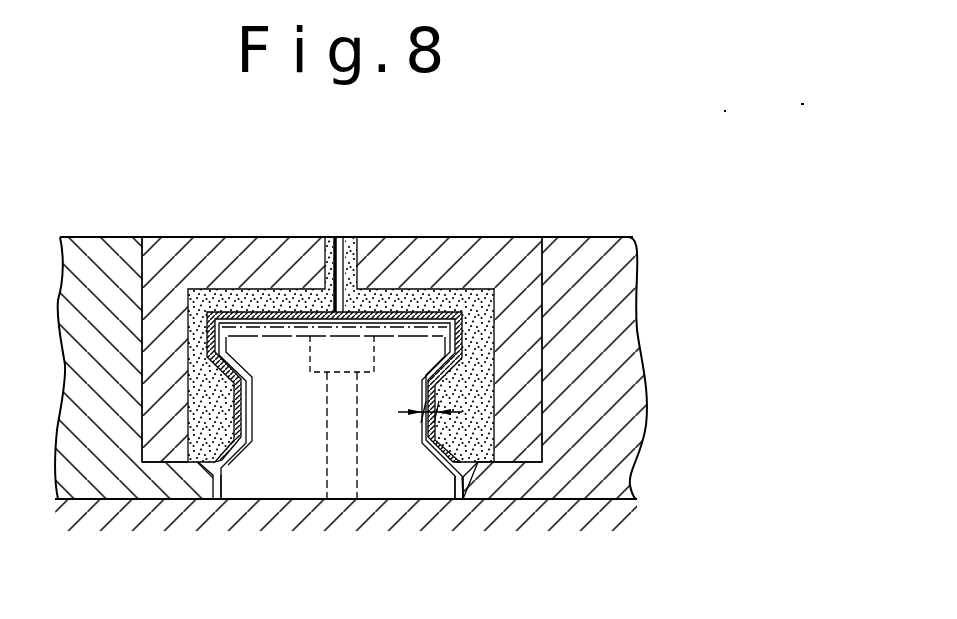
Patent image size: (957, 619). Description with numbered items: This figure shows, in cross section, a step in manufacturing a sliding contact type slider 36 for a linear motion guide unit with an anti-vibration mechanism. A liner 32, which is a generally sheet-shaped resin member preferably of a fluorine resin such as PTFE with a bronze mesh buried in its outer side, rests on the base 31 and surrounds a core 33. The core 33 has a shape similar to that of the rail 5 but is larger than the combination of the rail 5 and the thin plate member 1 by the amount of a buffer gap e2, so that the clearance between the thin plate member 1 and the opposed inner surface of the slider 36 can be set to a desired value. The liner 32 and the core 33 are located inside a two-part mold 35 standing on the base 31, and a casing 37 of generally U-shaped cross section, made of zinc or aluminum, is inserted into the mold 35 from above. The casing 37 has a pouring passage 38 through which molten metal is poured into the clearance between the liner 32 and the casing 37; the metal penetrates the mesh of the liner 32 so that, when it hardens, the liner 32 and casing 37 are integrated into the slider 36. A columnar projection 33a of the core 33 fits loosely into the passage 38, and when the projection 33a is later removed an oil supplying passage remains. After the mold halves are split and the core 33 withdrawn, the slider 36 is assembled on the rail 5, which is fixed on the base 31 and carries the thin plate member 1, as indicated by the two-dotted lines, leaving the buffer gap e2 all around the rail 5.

The slider 36 is at (201, 229).
The casing 37 is at (265, 250).
The passage 38 is at (330, 233).
The columnar projection 33a is at (343, 233).
The thin plate member 1 is at (406, 318).
The liner 32 is at (438, 305).
The mold 35 is at (598, 309).
The core 33 is at (252, 482).
The rail 5 is at (463, 477).
The base 31 is at (566, 512).
The buffer gap e2 is at (422, 416).